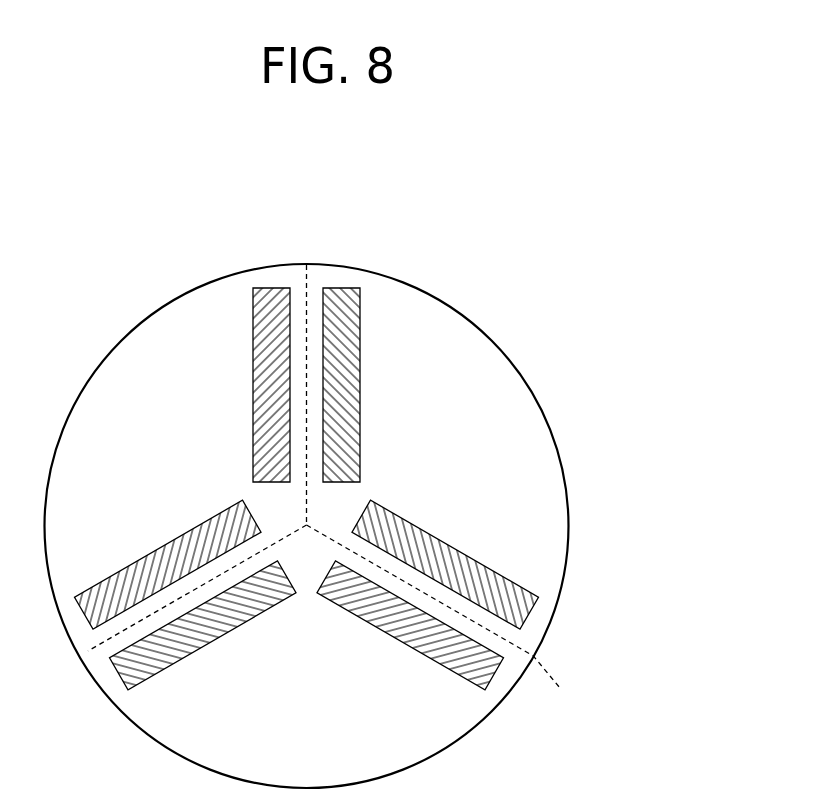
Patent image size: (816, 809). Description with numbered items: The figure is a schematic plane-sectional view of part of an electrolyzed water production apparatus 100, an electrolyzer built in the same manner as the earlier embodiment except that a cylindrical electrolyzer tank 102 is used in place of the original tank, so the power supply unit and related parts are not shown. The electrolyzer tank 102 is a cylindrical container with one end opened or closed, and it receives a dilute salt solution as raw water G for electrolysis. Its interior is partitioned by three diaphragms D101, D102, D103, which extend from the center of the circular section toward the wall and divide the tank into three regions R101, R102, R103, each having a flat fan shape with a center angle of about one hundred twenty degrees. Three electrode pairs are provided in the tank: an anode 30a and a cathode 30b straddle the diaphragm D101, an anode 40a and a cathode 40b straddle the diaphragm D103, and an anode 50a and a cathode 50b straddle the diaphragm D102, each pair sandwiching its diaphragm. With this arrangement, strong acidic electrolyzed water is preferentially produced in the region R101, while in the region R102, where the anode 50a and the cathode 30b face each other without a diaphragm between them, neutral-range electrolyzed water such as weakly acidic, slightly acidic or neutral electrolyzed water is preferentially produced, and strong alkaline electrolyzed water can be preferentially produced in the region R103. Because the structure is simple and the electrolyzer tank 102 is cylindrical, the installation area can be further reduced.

The electrolyzed water production apparatus 100 is at (474, 224).
The electrolyzer tank 102 is at (487, 337).
The raw water G is at (543, 468).
The diaphragm D101 is at (307, 263).
The diaphragm D102 is at (461, 626).
The diaphragm D103 is at (88, 652).
The region R101 is at (220, 394).
The region R102 is at (476, 394).
The region R103 is at (343, 732).
The anode 30a is at (253, 449).
The cathode 30b is at (360, 441).
The anode 40a is at (150, 553).
The cathode 40b is at (250, 620).
The anode 50a is at (430, 534).
The cathode 50b is at (385, 632).